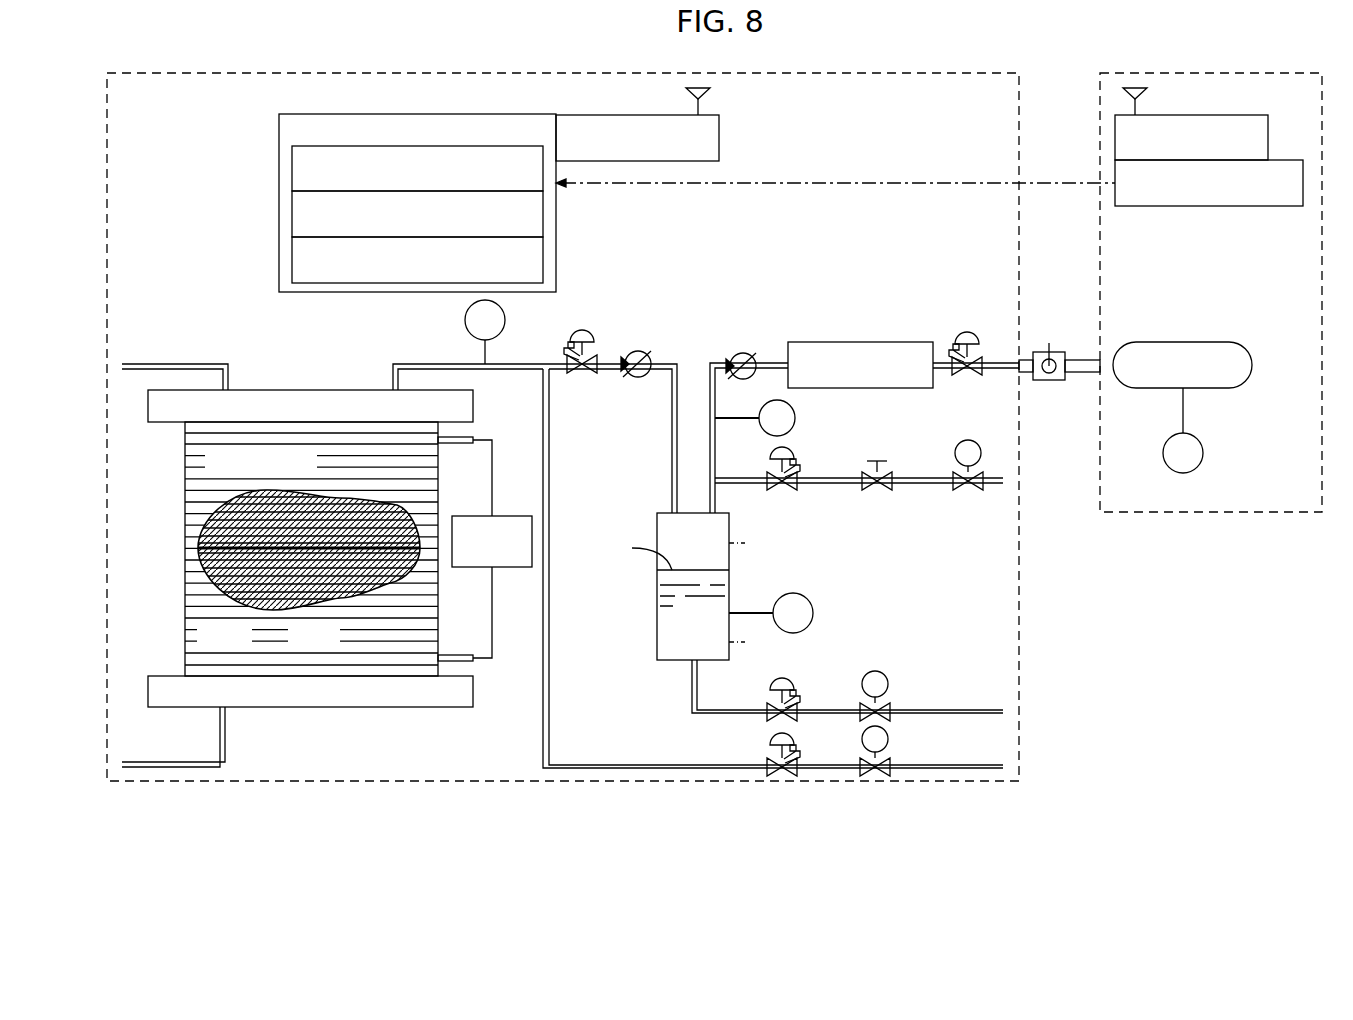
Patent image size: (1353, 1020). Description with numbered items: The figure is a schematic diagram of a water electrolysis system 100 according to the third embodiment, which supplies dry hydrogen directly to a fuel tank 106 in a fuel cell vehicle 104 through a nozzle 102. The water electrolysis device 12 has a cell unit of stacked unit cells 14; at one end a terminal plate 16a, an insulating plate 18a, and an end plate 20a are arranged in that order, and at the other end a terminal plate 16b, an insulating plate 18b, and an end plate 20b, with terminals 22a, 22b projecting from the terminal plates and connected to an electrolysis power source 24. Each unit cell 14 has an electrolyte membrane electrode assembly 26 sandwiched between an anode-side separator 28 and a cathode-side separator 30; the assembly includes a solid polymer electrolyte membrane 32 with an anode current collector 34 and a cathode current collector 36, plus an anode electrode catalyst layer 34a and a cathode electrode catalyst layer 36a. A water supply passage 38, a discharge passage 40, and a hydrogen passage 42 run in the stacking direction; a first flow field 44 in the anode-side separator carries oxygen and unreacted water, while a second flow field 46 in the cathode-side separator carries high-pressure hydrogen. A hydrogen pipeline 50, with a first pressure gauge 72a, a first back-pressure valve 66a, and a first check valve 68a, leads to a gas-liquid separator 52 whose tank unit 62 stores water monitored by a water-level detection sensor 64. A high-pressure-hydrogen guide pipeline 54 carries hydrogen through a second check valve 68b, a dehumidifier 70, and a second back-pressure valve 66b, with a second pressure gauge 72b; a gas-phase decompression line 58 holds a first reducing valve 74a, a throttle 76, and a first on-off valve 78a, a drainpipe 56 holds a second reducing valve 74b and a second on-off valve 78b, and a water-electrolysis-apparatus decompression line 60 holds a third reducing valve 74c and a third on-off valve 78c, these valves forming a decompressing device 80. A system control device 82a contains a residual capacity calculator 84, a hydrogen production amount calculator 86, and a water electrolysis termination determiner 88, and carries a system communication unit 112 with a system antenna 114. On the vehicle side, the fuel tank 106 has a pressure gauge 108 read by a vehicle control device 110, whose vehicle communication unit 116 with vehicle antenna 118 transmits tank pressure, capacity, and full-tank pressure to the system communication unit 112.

The water electrolysis device 12 is at (320, 532).
The unit cell 14 is at (183, 590).
The terminal plate 16a is at (329, 440).
The terminal plate 16b is at (395, 662).
The insulating plate 18a is at (305, 428).
The insulating plate 18b is at (305, 672).
The end plate 20a is at (420, 388).
The end plate 20b is at (447, 700).
The terminal 22a is at (452, 444).
The terminal 22b is at (455, 656).
The electrolysis power source 24 is at (520, 516).
The electrolyte membrane electrode assembly 26 is at (266, 550).
The anode-side separator 28 is at (278, 492).
The cathode-side separator 30 is at (278, 580).
The solid polymer electrolyte membrane 32 is at (200, 548).
The anode current collector 34 is at (203, 533).
The anode electrode catalyst layer 34a is at (297, 500).
The cathode current collector 36 is at (175, 570).
The cathode electrode catalyst layer 36a is at (308, 602).
The water supply passage 38 is at (226, 710).
The discharge passage 40 is at (230, 388).
The hydrogen passage 42 is at (393, 388).
The first flow field 44 is at (355, 550).
The second flow field 46 is at (214, 578).
The hydrogen pipeline 50 is at (562, 372).
The gas-liquid separator 52 is at (678, 609).
The high-pressure-hydrogen guide pipeline 54 is at (772, 362).
The drainpipe 56 is at (692, 688).
The gas-phase decompression line 58 is at (750, 486).
The water-electrolysis-apparatus decompression line 60 is at (549, 658).
The tank unit 62 is at (657, 626).
The water-level detection sensor 64 is at (798, 593).
The first back-pressure valve 66a is at (584, 334).
The second back-pressure valve 66b is at (968, 336).
The first check valve 68a is at (638, 350).
The second check valve 68b is at (742, 352).
The dehumidifier 70 is at (896, 388).
The first pressure gauge 72a is at (518, 316).
The second pressure gauge 72b is at (796, 416).
The first reducing valve 74a is at (794, 492).
The second reducing valve 74b is at (770, 686).
The third reducing valve 74c is at (770, 743).
The throttle 76 is at (884, 492).
The first on-off valve 78a is at (978, 492).
The second on-off valve 78b is at (888, 685).
The third on-off valve 78c is at (888, 741).
The decompressing device 80 is at (968, 683).
The system control device 82a is at (380, 200).
The residual capacity calculator 84 is at (292, 161).
The hydrogen production amount calculator 86 is at (292, 205).
The water electrolysis termination determiner 88 is at (292, 253).
The water electrolysis system 100 is at (1153, 658).
The nozzle 102 is at (1078, 352).
The fuel cell vehicle 104 is at (1095, 106).
The fuel tank 106 is at (1212, 342).
The pressure gauge 108 is at (1198, 440).
The vehicle control device 110 is at (1280, 206).
The system communication unit 112 is at (719, 143).
The system antenna 114 is at (708, 93).
The vehicle communication unit 116 is at (1268, 143).
The vehicle antenna 118 is at (1145, 93).